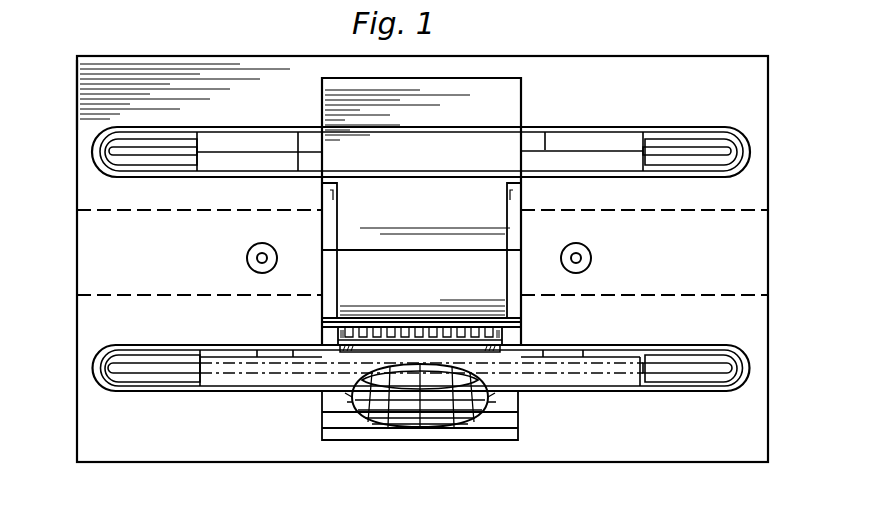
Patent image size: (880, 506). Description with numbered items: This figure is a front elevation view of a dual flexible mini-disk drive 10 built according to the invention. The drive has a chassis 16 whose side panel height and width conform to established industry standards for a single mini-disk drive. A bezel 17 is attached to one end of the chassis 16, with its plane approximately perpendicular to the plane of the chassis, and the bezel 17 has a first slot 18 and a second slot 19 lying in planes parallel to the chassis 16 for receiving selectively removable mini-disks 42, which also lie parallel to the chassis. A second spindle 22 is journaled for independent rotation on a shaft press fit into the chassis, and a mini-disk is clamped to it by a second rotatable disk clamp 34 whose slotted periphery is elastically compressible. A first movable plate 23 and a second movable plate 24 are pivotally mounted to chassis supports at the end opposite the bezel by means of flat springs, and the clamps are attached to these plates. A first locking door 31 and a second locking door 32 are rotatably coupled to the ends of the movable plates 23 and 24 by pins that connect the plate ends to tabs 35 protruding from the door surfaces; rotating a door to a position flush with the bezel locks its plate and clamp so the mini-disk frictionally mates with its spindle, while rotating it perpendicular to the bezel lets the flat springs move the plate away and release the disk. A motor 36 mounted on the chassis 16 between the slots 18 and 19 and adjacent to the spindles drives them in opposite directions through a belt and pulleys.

The dual flexible mini-disk drive 10 is at (136, 52).
The chassis 16 is at (745, 247).
The bezel 17 is at (77, 108).
The first slot 18 is at (746, 182).
The second slot 19 is at (700, 395).
The second spindle 22 is at (500, 343).
The first movable plate 23 is at (557, 138).
The second movable plate 24 is at (335, 406).
The first locking door 31 is at (432, 86).
The second locking door 32 is at (428, 432).
The second rotatable disk clamp 34 is at (496, 405).
The tabs 35 is at (337, 413).
The motor 36 is at (333, 297).
The mini-disks 42 is at (720, 142).